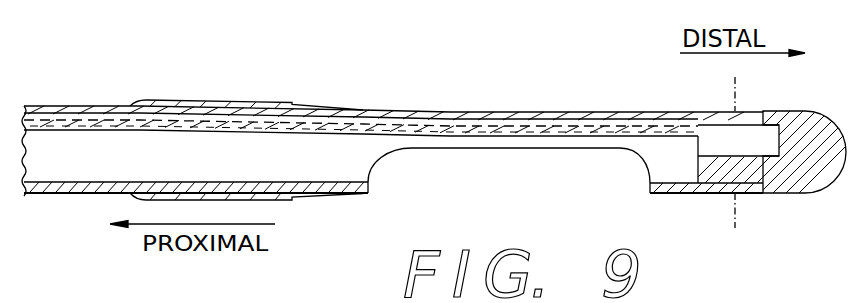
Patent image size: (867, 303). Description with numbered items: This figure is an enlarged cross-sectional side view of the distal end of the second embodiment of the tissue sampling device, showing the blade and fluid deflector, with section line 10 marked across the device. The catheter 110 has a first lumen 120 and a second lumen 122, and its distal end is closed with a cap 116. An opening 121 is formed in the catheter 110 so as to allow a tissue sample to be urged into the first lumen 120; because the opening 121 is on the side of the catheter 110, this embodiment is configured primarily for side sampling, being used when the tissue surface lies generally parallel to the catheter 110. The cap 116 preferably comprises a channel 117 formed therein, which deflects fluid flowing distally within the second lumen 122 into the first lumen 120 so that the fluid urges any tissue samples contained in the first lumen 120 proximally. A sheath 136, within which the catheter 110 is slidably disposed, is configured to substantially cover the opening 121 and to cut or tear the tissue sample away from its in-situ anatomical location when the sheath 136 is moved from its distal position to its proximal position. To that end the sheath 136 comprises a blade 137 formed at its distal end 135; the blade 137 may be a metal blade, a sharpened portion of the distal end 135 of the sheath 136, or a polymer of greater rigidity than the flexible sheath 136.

The section line 10- 10 is at (735, 77).
The catheter 110 is at (490, 111).
The cap 116 is at (820, 184).
The channel 117 is at (758, 148).
The first lumen 120 is at (112, 166).
The opening 121 is at (543, 175).
The second lumen 122 is at (82, 127).
The distal end 135 is at (239, 98).
The sheath 136 is at (75, 196).
The blade 137 is at (367, 197).